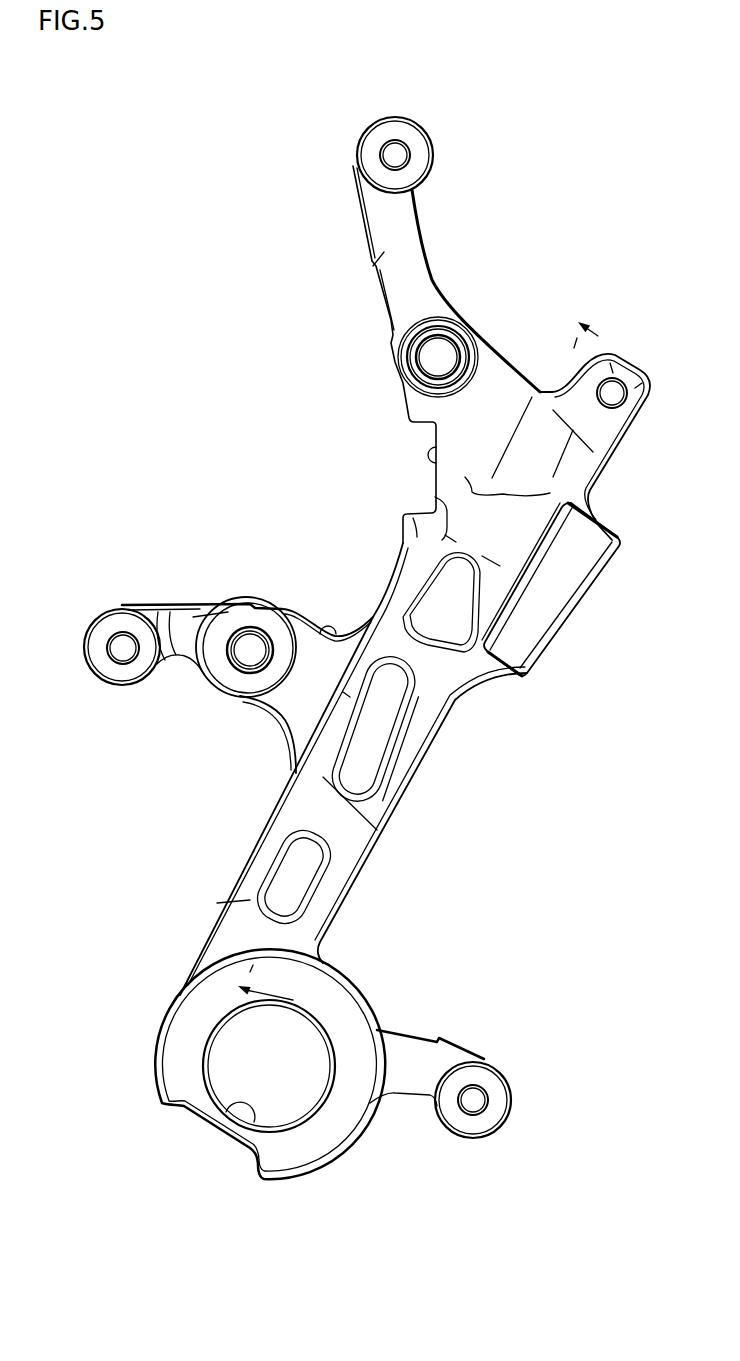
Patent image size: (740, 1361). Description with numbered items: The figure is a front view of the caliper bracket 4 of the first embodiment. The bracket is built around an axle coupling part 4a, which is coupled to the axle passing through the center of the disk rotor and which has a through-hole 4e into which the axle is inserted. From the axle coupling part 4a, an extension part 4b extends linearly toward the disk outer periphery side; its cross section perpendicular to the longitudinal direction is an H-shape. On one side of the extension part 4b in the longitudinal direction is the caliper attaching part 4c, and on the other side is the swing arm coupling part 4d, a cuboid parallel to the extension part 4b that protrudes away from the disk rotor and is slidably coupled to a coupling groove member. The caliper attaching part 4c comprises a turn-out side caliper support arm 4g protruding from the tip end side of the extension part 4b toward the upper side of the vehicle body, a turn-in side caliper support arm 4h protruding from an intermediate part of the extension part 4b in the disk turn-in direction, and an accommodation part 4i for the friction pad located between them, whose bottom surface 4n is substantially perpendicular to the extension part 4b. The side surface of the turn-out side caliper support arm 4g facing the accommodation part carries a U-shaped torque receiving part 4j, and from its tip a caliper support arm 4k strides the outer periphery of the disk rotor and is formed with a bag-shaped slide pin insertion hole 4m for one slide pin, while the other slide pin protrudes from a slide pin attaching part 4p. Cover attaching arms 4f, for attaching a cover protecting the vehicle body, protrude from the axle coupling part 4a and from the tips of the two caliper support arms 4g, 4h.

The caliper bracket 4 is at (384, 92).
The axle coupling part 4a is at (350, 1000).
The extension part 4b is at (402, 760).
The caliper attaching part 4c is at (225, 705).
The swing arm coupling part 4d is at (560, 598).
The through-hole 4e is at (250, 1122).
The cover attaching arm 4f is at (410, 230).
The turn-out side caliper support arm 4g is at (501, 358).
The turn-in side caliper support arm 4h is at (283, 708).
The accommodation part 4i is at (280, 598).
The torque receiving part 4j is at (426, 460).
The caliper support arm 4k is at (450, 323).
The slide pin insertion hole 4m is at (421, 352).
The bottom surface 4n is at (321, 638).
The slide pin attaching part 4p is at (225, 677).